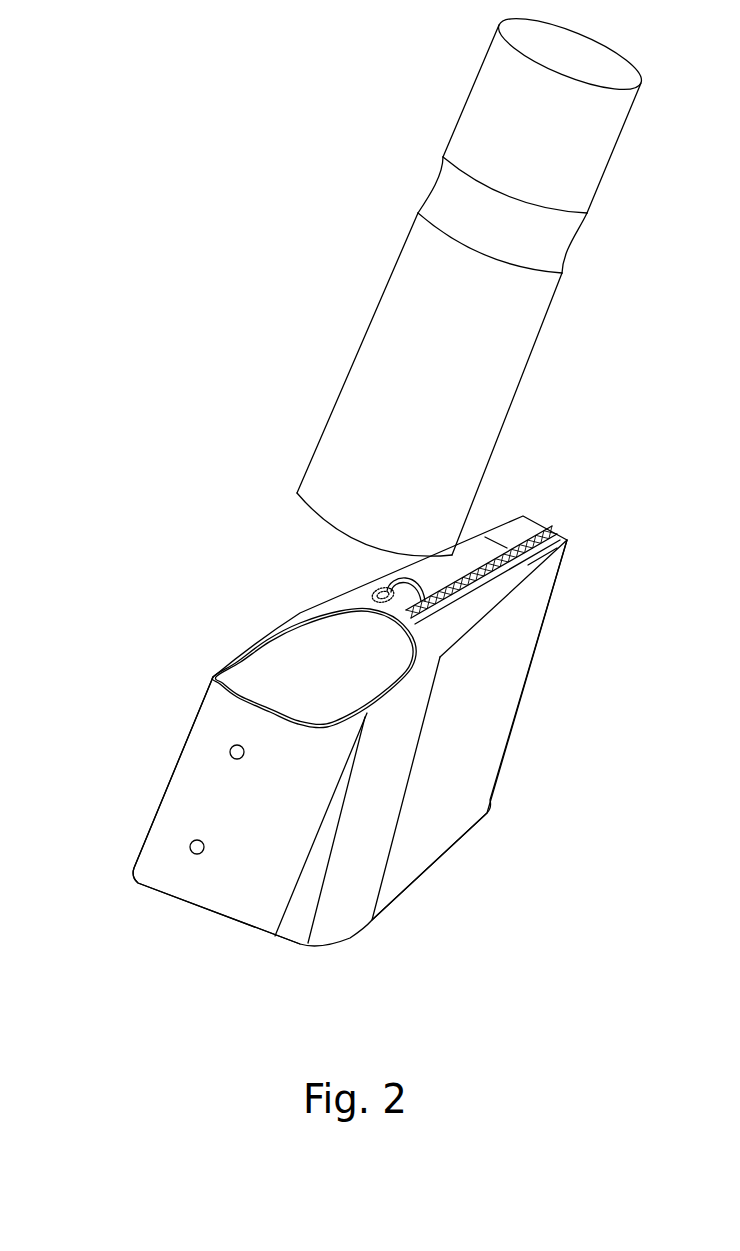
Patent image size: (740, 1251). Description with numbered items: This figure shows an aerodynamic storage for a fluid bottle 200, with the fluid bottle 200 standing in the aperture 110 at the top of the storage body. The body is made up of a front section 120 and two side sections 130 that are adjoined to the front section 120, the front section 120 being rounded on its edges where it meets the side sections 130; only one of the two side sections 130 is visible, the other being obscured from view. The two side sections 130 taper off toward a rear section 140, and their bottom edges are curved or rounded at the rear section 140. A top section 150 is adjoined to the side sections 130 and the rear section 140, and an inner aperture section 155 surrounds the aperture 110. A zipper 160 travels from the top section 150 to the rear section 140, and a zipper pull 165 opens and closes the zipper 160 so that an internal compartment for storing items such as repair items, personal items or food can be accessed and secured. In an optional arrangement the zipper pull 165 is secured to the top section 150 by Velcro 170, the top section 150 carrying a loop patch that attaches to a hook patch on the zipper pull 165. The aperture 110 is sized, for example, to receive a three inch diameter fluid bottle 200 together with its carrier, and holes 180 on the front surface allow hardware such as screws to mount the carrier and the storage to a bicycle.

The aperture 110 is at (338, 678).
The front section 120 is at (247, 888).
The side sections 130 is at (448, 793).
The rear section 140 is at (566, 678).
The top section 150 is at (478, 590).
The inner aperture section 155 is at (290, 645).
The zipper 160 is at (535, 532).
The zipper pull 165 is at (388, 578).
The Velcro 170 is at (372, 590).
The holes 180 is at (192, 845).
The fluid bottle 200 is at (462, 350).